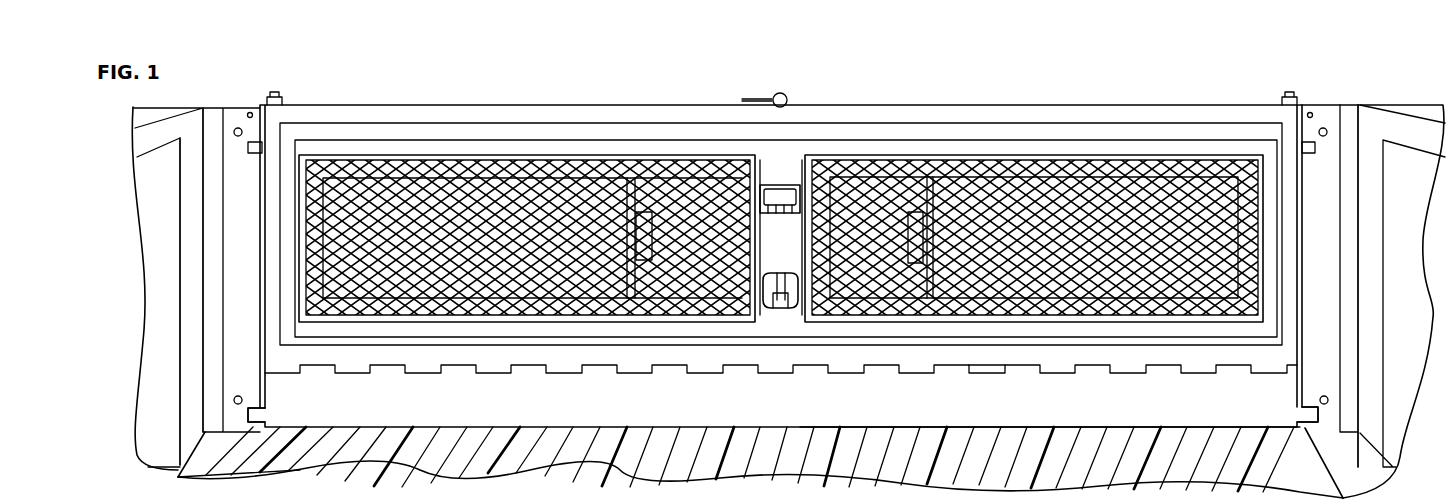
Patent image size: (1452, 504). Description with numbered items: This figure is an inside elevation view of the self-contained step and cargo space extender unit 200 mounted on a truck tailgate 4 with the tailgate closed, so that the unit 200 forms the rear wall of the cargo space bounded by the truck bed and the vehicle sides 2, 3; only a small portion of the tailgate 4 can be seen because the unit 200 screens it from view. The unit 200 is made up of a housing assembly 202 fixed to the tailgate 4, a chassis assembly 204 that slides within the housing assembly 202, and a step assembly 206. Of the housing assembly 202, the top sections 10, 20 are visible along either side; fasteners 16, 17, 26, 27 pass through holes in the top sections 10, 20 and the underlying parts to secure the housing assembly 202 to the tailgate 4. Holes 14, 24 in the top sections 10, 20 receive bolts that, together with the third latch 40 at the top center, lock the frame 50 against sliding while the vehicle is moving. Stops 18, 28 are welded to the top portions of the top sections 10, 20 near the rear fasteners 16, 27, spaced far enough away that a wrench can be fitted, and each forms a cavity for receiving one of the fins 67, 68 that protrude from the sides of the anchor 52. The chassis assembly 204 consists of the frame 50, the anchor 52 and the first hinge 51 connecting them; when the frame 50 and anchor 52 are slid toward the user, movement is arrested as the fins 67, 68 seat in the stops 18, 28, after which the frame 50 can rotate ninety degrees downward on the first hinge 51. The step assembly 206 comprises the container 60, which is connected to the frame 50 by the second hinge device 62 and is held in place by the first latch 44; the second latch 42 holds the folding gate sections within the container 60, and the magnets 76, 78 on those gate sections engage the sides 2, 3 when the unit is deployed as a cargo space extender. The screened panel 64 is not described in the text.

The vehicle side 2 is at (173, 258).
The vehicle side 3 is at (1393, 225).
The tailgate 4 is at (695, 460).
The top section 10 is at (237, 230).
The hole 14 is at (252, 112).
The fastener 16 is at (1326, 136).
The fastener 17 is at (1324, 405).
The stop 18 is at (262, 148).
The top section 20 is at (1328, 340).
The hole 24 is at (1312, 112).
The fastener 26 is at (234, 405).
The fastener 27 is at (236, 136).
The stop 28 is at (1302, 147).
The third latch 40 is at (789, 96).
The second latch 42 is at (773, 217).
The first latch 44 is at (773, 310).
The frame 50 is at (930, 372).
The first hinge 51 is at (1003, 376).
The anchor 52 is at (845, 405).
The container 60 is at (485, 148).
The second hinge device 62 is at (400, 122).
The screen panel 64 is at (977, 187).
The fin 67 is at (1305, 415).
The fin 68 is at (265, 415).
The magnet 76 is at (915, 222).
The magnet 78 is at (647, 213).
The step and cargo space extender unit 200 is at (580, 97).
The housing assembly 202 is at (216, 97).
The chassis assembly 204 is at (557, 402).
The step assembly 206 is at (800, 150).